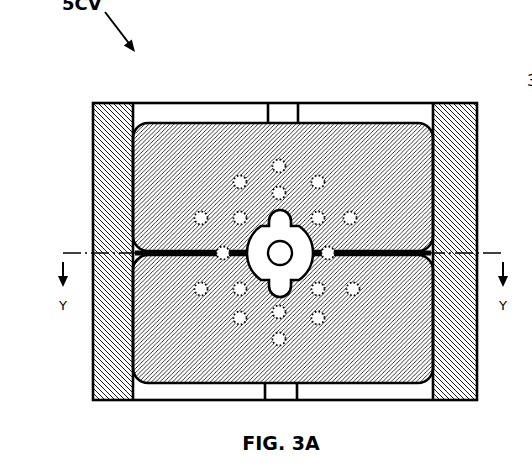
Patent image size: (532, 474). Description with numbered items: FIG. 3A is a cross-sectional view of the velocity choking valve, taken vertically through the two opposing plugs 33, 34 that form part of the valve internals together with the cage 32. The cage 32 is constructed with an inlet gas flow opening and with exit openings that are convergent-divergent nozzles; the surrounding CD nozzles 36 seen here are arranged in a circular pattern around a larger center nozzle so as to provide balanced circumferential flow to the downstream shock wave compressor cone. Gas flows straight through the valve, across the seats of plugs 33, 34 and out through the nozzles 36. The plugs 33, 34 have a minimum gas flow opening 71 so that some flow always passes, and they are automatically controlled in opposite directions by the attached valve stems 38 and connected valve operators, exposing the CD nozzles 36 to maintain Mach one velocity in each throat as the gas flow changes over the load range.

The cage 32 is at (93, 199).
The plug 33 is at (222, 122).
The plug 34 is at (152, 384).
The surrounding CD nozzles 36 is at (233, 318).
The valve stem 38 is at (277, 103).
The minimum gas flow opening 71 is at (310, 267).